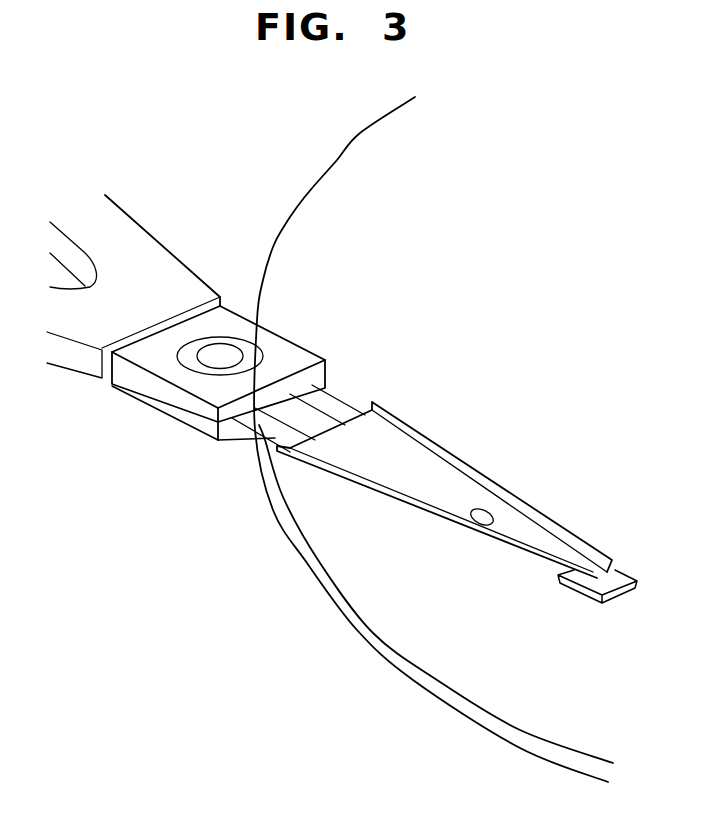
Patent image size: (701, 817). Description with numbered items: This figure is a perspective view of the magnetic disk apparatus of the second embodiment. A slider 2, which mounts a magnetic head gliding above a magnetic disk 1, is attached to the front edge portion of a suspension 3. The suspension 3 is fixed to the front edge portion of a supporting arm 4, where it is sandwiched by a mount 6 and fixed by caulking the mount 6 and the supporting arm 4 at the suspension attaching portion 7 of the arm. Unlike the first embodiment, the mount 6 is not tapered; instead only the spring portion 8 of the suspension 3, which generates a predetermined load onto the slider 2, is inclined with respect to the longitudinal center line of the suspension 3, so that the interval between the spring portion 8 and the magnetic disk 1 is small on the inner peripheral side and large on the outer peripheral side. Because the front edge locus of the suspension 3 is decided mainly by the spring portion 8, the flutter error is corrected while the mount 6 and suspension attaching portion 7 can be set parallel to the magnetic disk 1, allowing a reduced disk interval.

The magnetic disk 1 is at (397, 612).
The slider 2 is at (622, 598).
The suspension 3 is at (457, 490).
The supporting arm 4 is at (102, 315).
The mount 6 is at (187, 415).
The suspension attaching portion 7 is at (275, 355).
The spring portion 8 is at (335, 418).